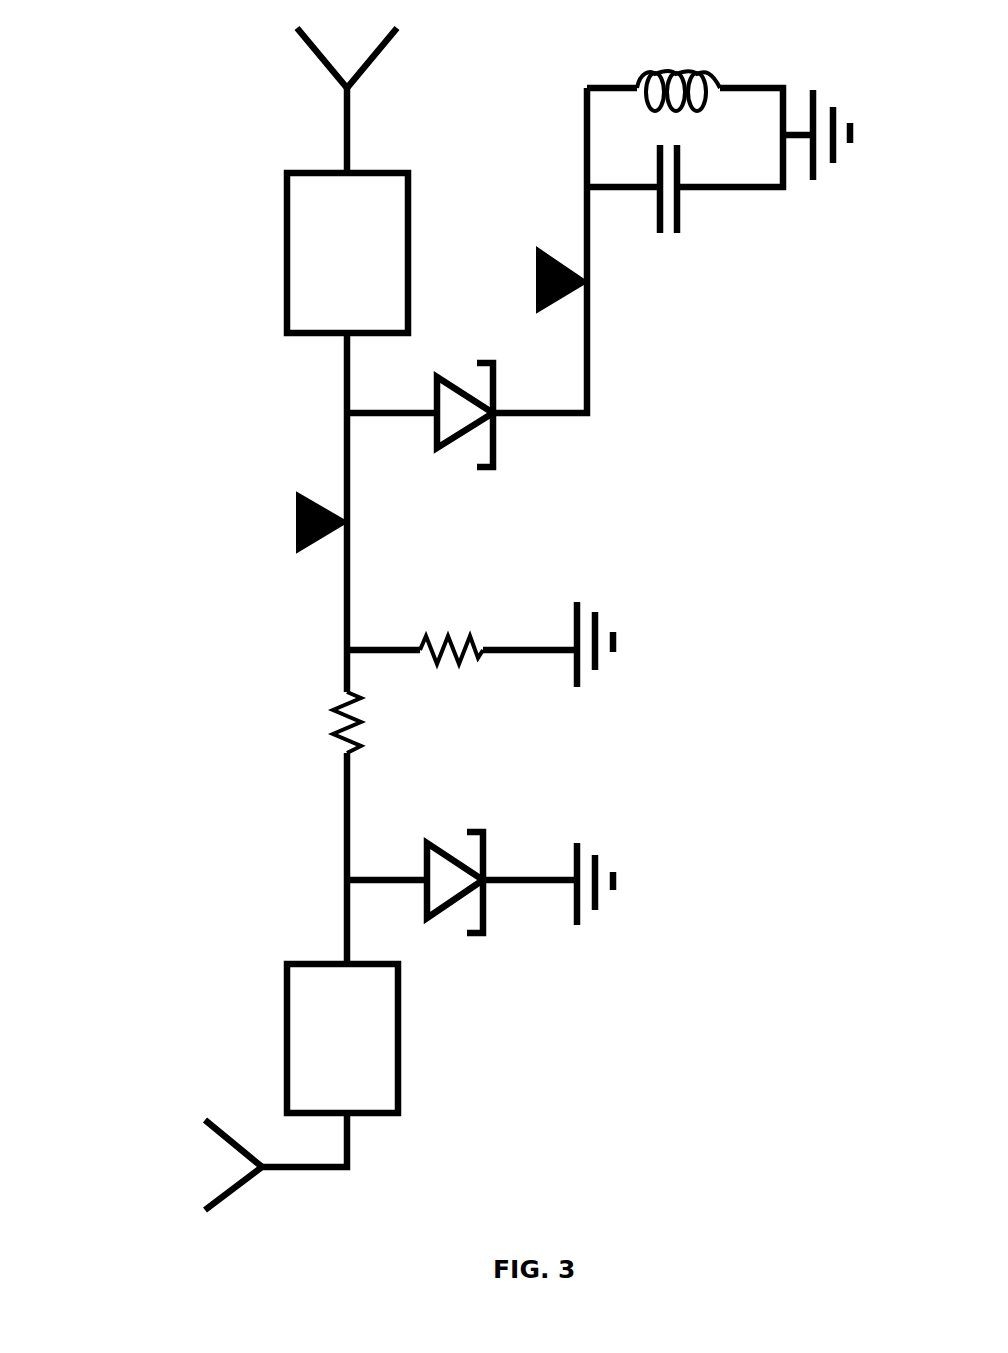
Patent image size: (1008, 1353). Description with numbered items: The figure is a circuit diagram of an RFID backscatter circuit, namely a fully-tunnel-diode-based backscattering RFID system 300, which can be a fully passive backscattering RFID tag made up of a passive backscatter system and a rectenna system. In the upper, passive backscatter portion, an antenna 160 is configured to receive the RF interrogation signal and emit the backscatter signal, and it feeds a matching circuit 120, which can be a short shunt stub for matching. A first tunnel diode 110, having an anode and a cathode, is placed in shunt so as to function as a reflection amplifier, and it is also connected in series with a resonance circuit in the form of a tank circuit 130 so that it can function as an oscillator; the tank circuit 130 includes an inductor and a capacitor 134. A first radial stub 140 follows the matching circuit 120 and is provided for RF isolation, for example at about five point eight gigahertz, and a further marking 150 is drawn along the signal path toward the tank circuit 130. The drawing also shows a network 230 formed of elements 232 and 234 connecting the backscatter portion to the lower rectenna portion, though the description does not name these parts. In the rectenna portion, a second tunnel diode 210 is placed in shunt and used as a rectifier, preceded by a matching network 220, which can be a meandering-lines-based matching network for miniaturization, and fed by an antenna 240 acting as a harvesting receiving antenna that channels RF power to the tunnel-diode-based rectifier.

The fully-tunnel-diode-based backscattering RFID system 300 is at (167, 617).
The antenna 160 is at (297, 42).
The matching circuit 120 is at (287, 210).
The first tunnel diode 110 is at (498, 460).
The signal flow indicator 150 is at (533, 265).
The tank circuit 130 is at (765, 228).
The capacitor 134 is at (697, 70).
The first radial stub 140 is at (293, 513).
The bias network 230 is at (410, 712).
The resistor 234 is at (450, 633).
The resistor 232 is at (332, 728).
The second tunnel diode 210 is at (467, 932).
The matching network 220 is at (287, 1003).
The antenna 240 is at (230, 1195).